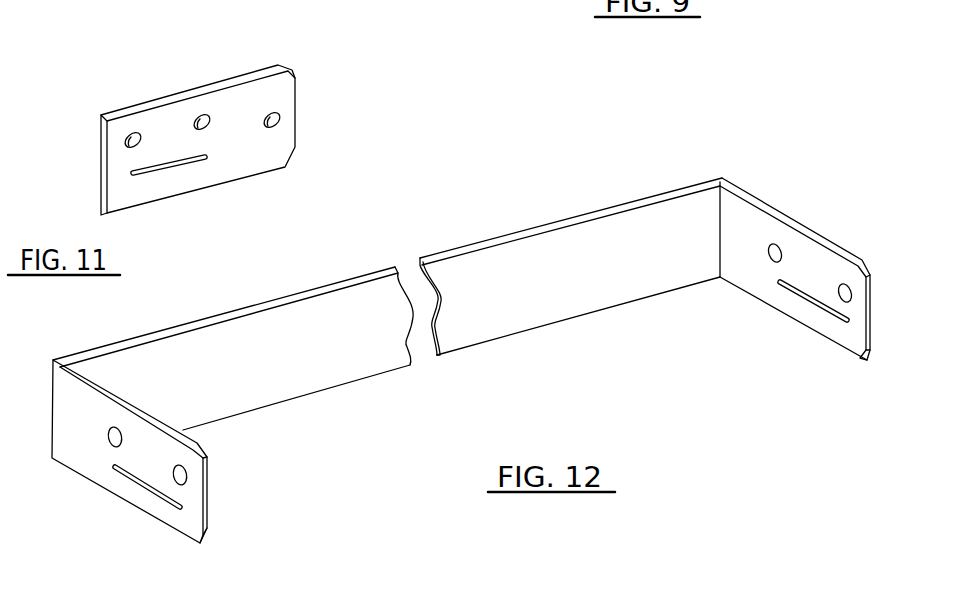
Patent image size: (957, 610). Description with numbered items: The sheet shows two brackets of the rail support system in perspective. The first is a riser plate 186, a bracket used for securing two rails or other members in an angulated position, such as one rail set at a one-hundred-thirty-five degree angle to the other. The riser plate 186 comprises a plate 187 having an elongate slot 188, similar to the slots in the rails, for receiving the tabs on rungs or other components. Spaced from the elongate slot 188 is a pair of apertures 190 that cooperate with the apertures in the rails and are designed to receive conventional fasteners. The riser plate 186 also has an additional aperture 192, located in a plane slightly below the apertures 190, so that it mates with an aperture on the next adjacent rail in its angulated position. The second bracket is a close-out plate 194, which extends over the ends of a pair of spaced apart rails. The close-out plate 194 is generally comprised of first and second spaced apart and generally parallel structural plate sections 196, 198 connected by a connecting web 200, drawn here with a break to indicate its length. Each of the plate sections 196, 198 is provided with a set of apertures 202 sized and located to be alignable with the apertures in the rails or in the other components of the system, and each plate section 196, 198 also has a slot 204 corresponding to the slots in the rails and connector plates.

In FIG. 11, the riser plate 186 is at (118, 81).
In FIG. 11, the plate 187 is at (235, 92).
In FIG. 11, the elongate slot 188 is at (170, 165).
In FIG. 11, the apertures 190 is at (202, 113).
In FIG. 11, the aperture 192 is at (283, 120).
In FIG. 12, the close-out plate 194 is at (520, 203).
In FIG. 12, the first structural plate section 196 is at (85, 467).
In FIG. 12, the second structural plate section 198 is at (793, 220).
In FIG. 12, the connecting web 200 is at (320, 282).
In FIG. 12, the apertures 202 is at (113, 427).
In FIG. 12, the slots 204 is at (808, 300).